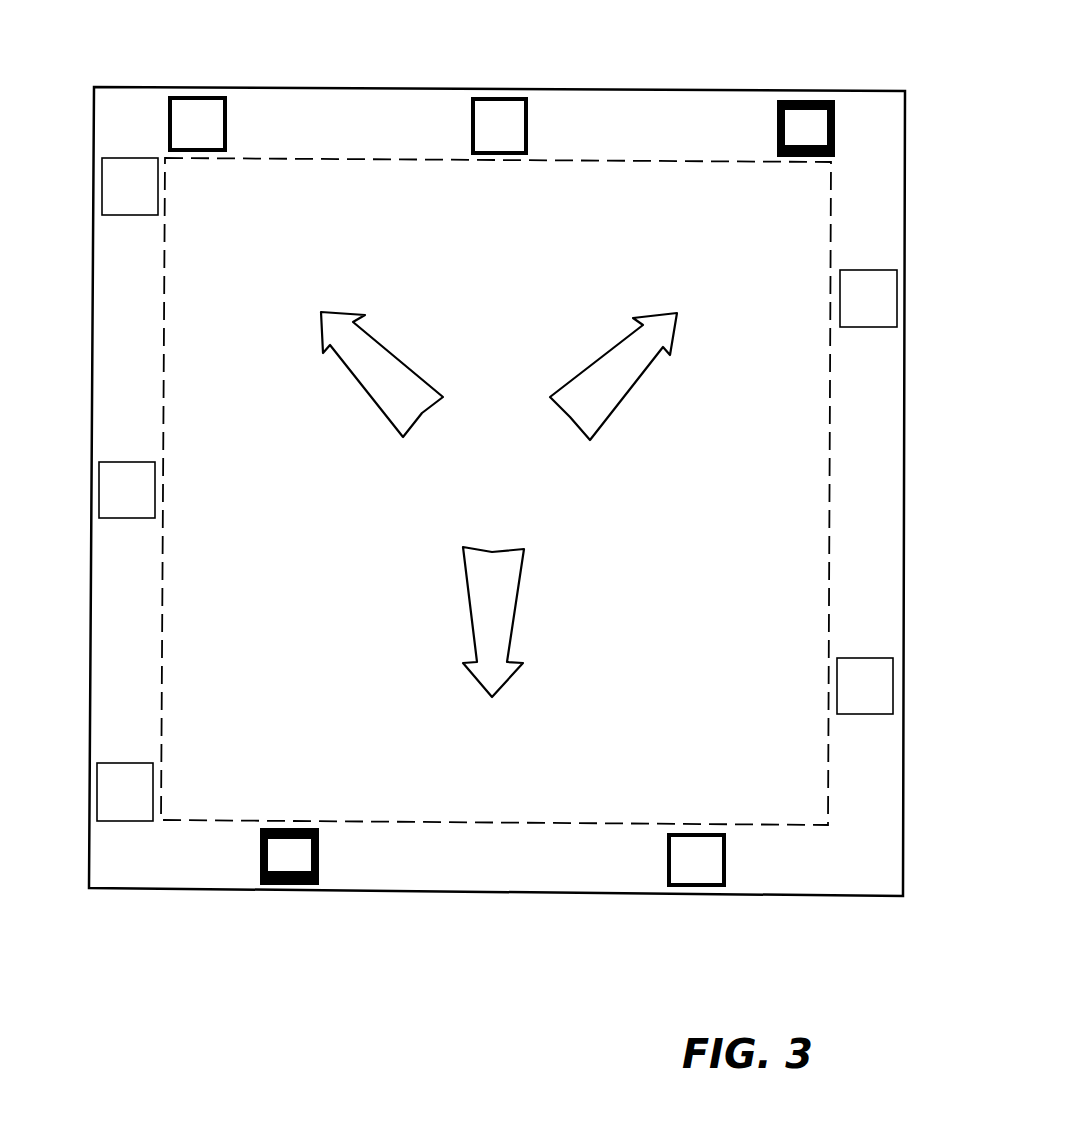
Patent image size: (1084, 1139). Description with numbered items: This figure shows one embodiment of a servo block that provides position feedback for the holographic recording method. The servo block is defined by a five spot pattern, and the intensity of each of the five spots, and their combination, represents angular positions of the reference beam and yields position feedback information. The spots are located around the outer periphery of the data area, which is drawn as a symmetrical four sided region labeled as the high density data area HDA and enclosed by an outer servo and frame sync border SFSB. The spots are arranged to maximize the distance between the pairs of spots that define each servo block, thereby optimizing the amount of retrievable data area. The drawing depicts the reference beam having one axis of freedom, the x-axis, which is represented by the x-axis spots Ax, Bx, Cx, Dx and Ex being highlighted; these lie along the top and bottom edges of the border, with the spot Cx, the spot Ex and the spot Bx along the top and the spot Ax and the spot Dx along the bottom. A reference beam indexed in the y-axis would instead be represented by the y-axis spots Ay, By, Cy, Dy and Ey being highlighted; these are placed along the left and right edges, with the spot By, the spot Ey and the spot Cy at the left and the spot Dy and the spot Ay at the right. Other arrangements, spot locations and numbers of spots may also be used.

The x-axis spot C Cx is at (197, 124).
The x-axis spot E Ex is at (499, 126).
The x-axis spot B Bx is at (806, 128).
The y-axis spot B By is at (130, 186).
The y-axis spot E Ey is at (127, 490).
The y-axis spot C Cy is at (125, 792).
The y-axis spot D Dy is at (868, 298).
The y-axis spot A Ay is at (865, 686).
The x-axis spot A Ax is at (289, 856).
The x-axis spot D Dx is at (696, 860).
The high density data area HDA is at (496, 491).
The servo and frame sync border SFSB is at (771, 38).